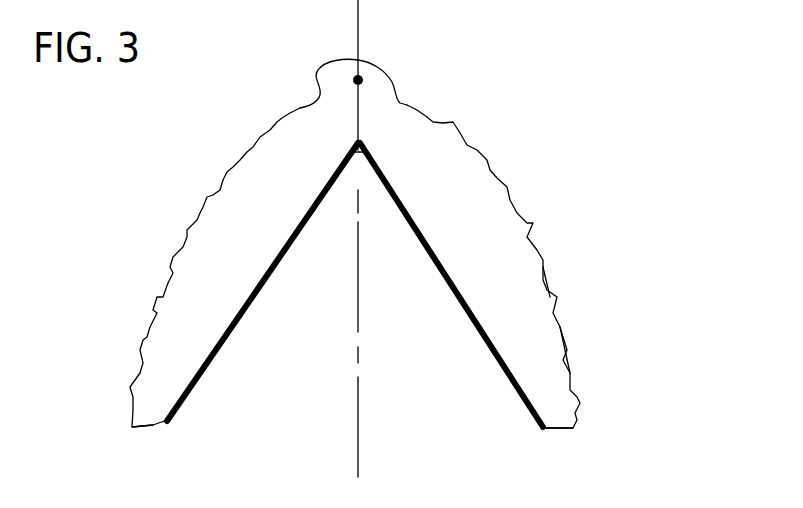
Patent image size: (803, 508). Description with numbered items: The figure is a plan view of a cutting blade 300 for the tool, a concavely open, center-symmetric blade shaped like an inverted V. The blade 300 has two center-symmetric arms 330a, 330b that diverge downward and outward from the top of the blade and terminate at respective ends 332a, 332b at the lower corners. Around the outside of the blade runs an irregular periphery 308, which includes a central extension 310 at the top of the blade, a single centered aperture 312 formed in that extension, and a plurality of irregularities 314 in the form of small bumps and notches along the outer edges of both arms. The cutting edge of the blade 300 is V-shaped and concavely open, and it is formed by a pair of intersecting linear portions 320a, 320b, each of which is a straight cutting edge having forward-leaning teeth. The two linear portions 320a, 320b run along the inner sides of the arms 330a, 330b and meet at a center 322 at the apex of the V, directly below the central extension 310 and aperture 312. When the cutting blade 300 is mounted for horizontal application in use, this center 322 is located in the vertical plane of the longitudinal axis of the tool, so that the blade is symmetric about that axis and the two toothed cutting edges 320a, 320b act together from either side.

The cutting blade 300 is at (531, 134).
The irregular periphery 308 is at (548, 278).
The central extension 310 is at (398, 88).
The aperture 312 is at (378, 64).
The irregularities 314 is at (565, 362).
The linear portion 320a is at (221, 343).
The linear portion 320b is at (490, 347).
The center 322 is at (358, 160).
The arm 330a is at (226, 240).
The arm 330b is at (478, 251).
The end 332a is at (153, 426).
The end 332b is at (558, 437).